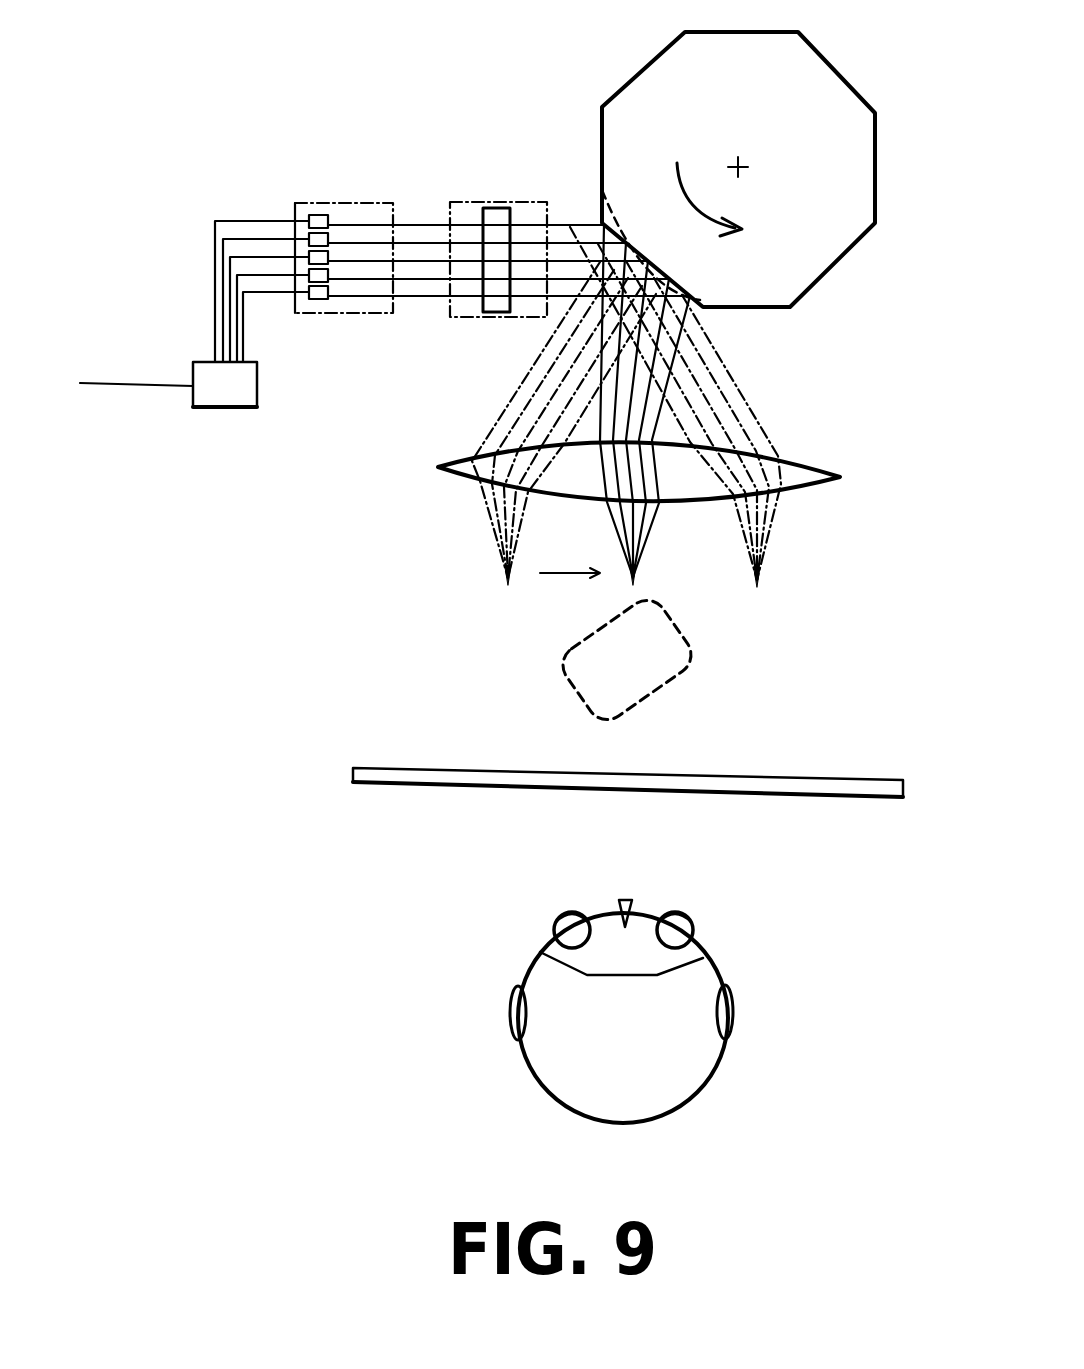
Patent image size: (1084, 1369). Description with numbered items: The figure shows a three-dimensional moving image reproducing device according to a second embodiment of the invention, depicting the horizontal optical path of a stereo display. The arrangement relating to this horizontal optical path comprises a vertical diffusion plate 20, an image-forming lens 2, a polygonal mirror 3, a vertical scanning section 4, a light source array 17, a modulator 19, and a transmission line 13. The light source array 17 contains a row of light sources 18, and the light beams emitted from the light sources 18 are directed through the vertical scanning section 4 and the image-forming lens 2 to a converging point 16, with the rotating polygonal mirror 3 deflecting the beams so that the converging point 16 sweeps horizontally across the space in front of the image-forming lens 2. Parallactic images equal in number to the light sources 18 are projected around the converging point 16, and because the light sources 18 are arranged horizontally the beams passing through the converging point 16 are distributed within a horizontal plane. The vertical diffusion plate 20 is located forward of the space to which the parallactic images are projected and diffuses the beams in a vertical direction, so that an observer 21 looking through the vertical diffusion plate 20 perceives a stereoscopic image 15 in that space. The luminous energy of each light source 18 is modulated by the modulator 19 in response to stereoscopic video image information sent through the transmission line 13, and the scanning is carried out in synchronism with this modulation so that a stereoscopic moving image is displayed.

The image-forming lens 2 is at (813, 462).
The polygonal mirror 3 is at (833, 60).
The vertical scanning section 4 is at (487, 200).
The transmission line 13 is at (122, 388).
The stereoscopic image 15 is at (700, 642).
The converging point 16 is at (503, 572).
The light source array 17 is at (357, 203).
The light sources 18 is at (318, 212).
The modulator 19 is at (258, 380).
The vertical diffusion plate 20 is at (820, 777).
The observer 21 is at (707, 960).